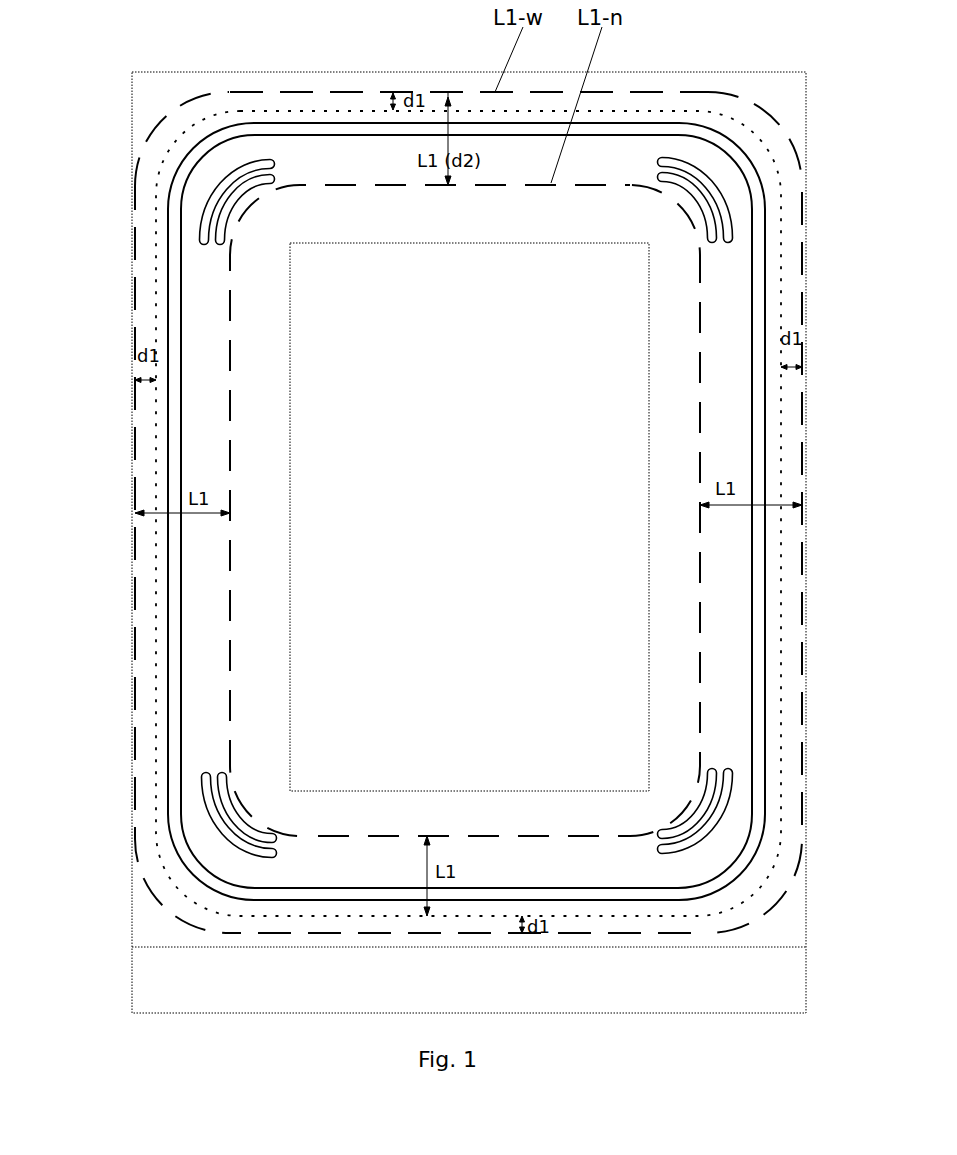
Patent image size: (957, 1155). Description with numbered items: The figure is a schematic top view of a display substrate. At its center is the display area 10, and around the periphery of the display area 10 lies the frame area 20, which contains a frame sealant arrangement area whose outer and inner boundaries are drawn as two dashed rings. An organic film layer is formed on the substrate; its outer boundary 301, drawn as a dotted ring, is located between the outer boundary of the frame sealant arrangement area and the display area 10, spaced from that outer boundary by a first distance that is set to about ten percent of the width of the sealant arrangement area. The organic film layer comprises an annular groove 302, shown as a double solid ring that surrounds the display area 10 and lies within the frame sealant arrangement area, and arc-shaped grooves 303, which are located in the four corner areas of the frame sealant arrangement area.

The display area 10 is at (648, 618).
The frame area 20 is at (773, 924).
The boundary of the organic film layer 301 is at (346, 108).
The annular groove 302 is at (237, 126).
The arc-shaped groove 303 is at (198, 215).